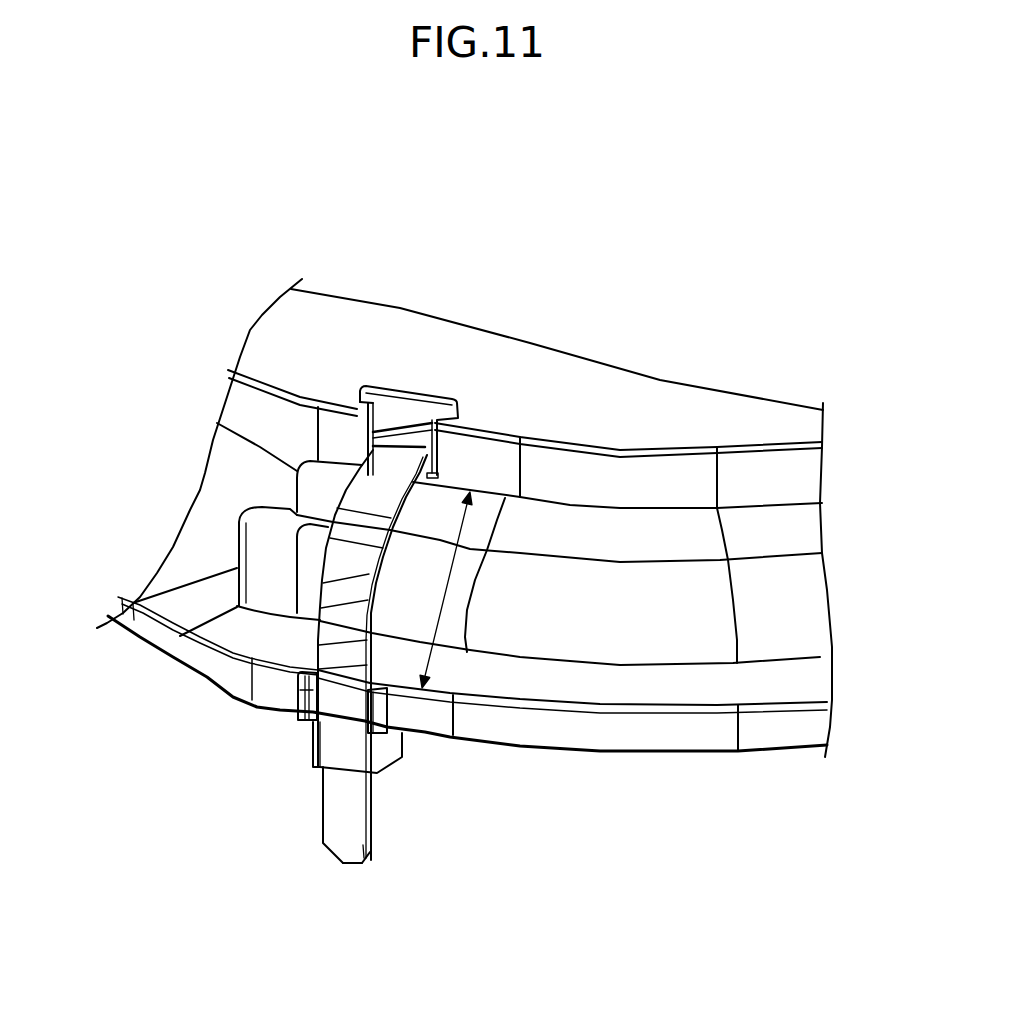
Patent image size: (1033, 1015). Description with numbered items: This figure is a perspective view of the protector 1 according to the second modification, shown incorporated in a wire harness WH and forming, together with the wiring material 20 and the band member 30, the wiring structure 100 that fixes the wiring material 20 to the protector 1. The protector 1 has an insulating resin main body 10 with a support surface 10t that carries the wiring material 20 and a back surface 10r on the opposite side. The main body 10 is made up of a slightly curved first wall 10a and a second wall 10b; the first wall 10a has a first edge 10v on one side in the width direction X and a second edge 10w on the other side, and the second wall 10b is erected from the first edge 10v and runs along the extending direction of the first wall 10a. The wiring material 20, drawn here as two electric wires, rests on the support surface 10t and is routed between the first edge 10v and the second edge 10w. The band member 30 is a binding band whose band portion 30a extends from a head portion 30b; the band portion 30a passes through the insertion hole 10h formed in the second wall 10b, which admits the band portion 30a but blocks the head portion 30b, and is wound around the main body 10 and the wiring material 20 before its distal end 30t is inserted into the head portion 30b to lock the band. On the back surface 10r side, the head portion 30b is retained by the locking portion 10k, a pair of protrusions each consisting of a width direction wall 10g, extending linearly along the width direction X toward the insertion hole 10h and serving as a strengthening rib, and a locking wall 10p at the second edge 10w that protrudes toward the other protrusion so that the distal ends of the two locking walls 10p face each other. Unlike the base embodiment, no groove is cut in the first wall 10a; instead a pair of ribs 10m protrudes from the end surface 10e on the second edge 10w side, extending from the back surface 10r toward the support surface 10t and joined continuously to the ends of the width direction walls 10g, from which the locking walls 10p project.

The protector 1 is at (694, 218).
The wiring structure 100 is at (843, 230).
The wire harness WH is at (560, 179).
The main body 10 is at (158, 210).
The first wall 10a is at (199, 418).
The second wall 10b is at (299, 414).
The first edge 10v is at (294, 351).
The insertion hole 10h is at (442, 343).
The second edge 10w is at (559, 450).
The support surface 10t is at (205, 670).
The ribs 10m is at (300, 693).
The locking portion 10k is at (304, 782).
The width direction wall 10g is at (269, 751).
The locking wall 10p is at (304, 790).
The back surface 10r is at (663, 753).
The end surface 10e is at (712, 733).
The wiring material 20 is at (771, 384).
The band member 30 is at (480, 784).
The band portion 30a is at (350, 562).
The head portion 30b is at (347, 755).
The distal end 30t is at (353, 890).
The width direction X is at (446, 590).